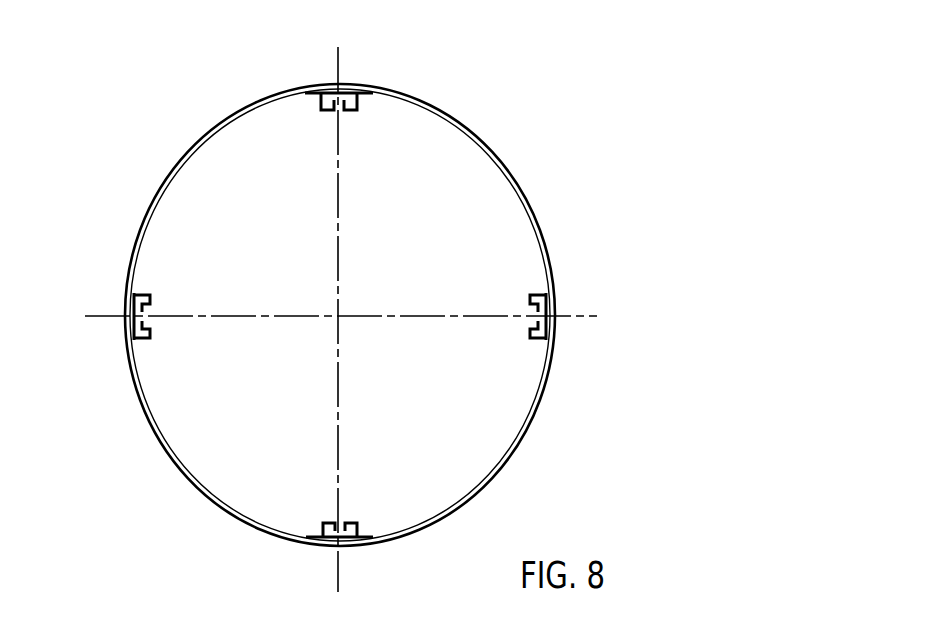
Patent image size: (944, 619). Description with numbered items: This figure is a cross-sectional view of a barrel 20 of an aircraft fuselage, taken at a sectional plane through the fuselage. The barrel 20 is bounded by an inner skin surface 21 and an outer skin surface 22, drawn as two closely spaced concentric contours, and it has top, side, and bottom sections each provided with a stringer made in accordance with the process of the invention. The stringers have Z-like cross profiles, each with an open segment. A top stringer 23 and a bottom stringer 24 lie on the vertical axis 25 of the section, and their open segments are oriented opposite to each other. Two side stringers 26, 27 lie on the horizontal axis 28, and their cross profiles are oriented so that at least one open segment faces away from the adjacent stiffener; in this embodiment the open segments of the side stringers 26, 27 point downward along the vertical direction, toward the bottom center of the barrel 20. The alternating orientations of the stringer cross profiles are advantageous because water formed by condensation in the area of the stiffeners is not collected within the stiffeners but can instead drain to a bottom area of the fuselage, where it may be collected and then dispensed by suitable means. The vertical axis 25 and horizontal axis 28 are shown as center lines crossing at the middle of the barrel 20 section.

The barrel 20 is at (170, 97).
The inner skin surface 21 is at (178, 452).
The outer skin surface 22 is at (150, 207).
The top stringer 23 is at (318, 114).
The bottom stringer 24 is at (356, 517).
The vertical axis 25 is at (338, 304).
The side stringer 26 is at (520, 292).
The side stringer 27 is at (155, 294).
The horizontal axis 28 is at (341, 317).